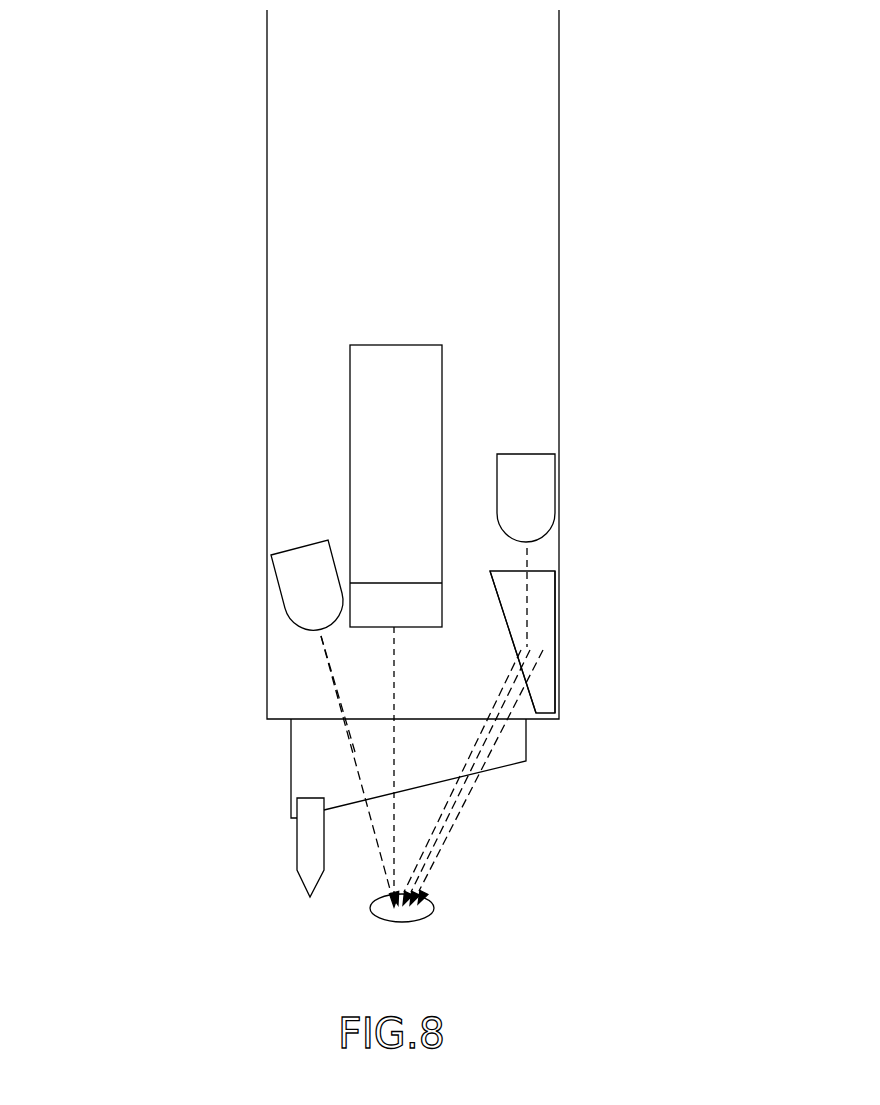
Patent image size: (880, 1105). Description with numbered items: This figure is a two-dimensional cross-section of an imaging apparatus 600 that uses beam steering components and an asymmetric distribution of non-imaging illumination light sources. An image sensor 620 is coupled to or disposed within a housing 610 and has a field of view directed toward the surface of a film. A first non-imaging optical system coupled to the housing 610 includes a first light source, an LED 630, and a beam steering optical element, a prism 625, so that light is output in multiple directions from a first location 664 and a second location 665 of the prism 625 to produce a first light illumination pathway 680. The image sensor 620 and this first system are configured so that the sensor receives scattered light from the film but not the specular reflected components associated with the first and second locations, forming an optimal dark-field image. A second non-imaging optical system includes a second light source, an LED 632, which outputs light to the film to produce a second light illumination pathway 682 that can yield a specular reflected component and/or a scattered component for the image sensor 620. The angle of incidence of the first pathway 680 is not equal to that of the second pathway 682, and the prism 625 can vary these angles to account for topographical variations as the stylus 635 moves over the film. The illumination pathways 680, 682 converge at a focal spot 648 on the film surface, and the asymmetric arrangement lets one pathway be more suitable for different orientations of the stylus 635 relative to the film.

The imaging apparatus 600 is at (126, 38).
The housing 610 is at (250, 190).
The image sensor 620 is at (407, 383).
The LED 630 is at (523, 485).
The LED 632 is at (300, 582).
The prism 625 is at (533, 590).
The first location 664 is at (527, 647).
The second location 665 is at (545, 669).
The light illumination pathway 680 is at (460, 829).
The light illumination pathway 682 is at (342, 741).
The stylus 635 is at (297, 849).
The focal spot 648 is at (368, 908).